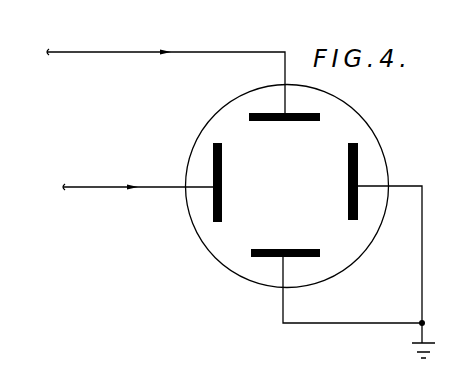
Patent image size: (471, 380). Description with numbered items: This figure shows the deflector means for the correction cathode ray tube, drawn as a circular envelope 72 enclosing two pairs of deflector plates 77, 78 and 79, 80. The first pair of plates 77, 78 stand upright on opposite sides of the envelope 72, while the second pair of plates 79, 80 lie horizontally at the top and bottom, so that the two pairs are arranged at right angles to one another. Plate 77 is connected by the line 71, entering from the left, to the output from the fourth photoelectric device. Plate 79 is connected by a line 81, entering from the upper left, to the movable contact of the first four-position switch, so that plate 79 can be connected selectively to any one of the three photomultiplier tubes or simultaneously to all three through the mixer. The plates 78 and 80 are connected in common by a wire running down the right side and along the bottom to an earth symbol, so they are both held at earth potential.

The line 71 is at (103, 187).
The envelope 72 is at (241, 278).
The deflector plate 77 is at (221, 157).
The deflector plate 78 is at (350, 154).
The deflector plate 79 is at (310, 122).
The deflector plate 80 is at (291, 249).
The line 81 is at (90, 52).